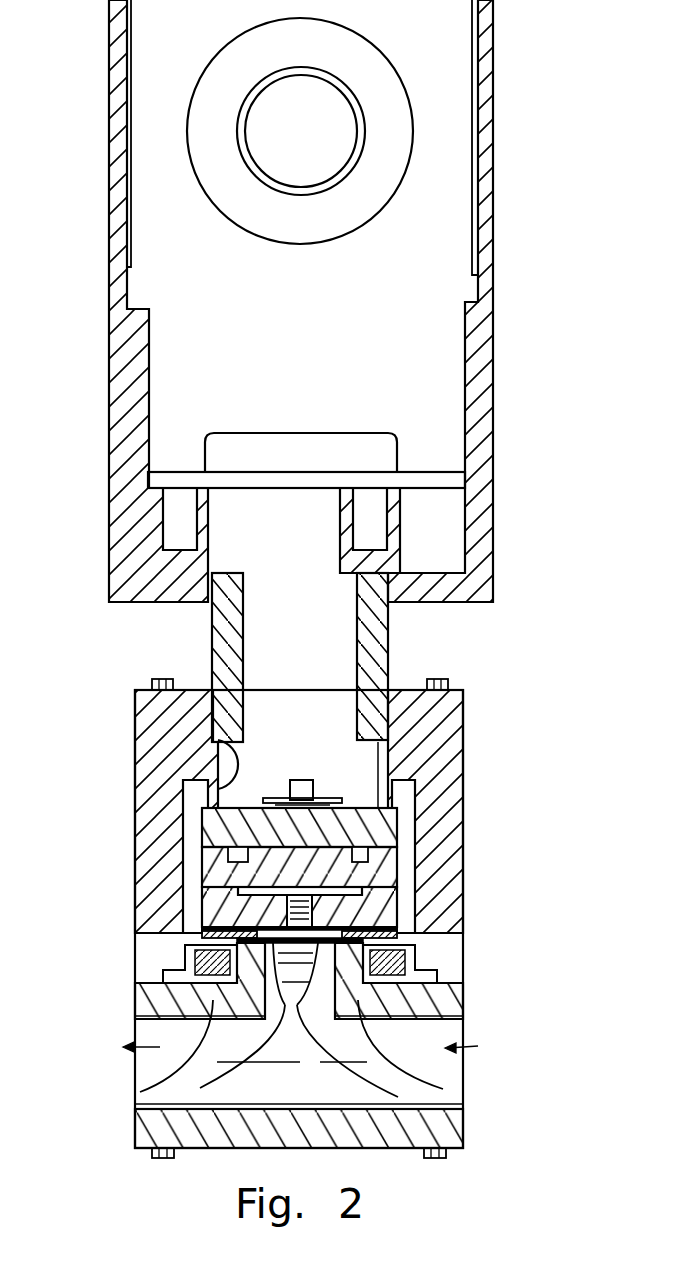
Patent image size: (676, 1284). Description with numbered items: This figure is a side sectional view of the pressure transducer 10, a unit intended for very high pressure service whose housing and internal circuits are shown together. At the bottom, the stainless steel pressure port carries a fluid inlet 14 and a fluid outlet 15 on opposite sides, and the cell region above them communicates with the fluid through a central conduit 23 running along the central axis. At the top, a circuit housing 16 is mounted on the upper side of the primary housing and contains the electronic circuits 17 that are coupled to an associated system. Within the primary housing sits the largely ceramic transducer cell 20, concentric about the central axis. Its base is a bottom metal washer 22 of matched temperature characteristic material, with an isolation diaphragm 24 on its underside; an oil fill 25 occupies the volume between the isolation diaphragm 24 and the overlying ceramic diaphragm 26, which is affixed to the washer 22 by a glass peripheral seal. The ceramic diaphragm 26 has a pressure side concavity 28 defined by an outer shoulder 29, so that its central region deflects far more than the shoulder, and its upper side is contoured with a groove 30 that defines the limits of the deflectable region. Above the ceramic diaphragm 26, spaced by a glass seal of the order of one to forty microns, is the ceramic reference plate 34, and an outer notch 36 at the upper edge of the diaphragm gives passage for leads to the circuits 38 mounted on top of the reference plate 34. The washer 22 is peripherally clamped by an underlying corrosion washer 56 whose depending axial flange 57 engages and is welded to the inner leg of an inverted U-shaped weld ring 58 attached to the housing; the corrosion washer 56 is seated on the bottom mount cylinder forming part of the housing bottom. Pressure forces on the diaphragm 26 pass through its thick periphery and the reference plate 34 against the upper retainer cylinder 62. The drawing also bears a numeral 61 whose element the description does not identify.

The pressure transducer 10 is at (443, 676).
The fluid inlet 14 is at (133, 1058).
The fluid outlet 15 is at (465, 1073).
The circuit housing 16 is at (495, 356).
The electronic circuits 17 is at (393, 452).
The transducer cell 20 is at (401, 850).
The bottom metal washer 22 is at (430, 944).
The central conduit 23 is at (420, 1110).
The isolation diaphragm 24 is at (200, 1088).
The oil fill 25 is at (365, 937).
The ceramic diaphragm 26 is at (228, 892).
The pressure side concavity 28 is at (225, 898).
The outer shoulder 29 is at (300, 891).
The groove 30 is at (317, 917).
The reference plate 34 is at (203, 852).
The outer notch 36 is at (212, 870).
The circuits 38 is at (318, 790).
The corrosion washer 56 is at (205, 933).
The depending axial flange 57 is at (443, 1089).
The weld ring 58 is at (143, 960).
The flow guide 61 is at (140, 1092).
The upper retainer cylinder 62 is at (232, 744).